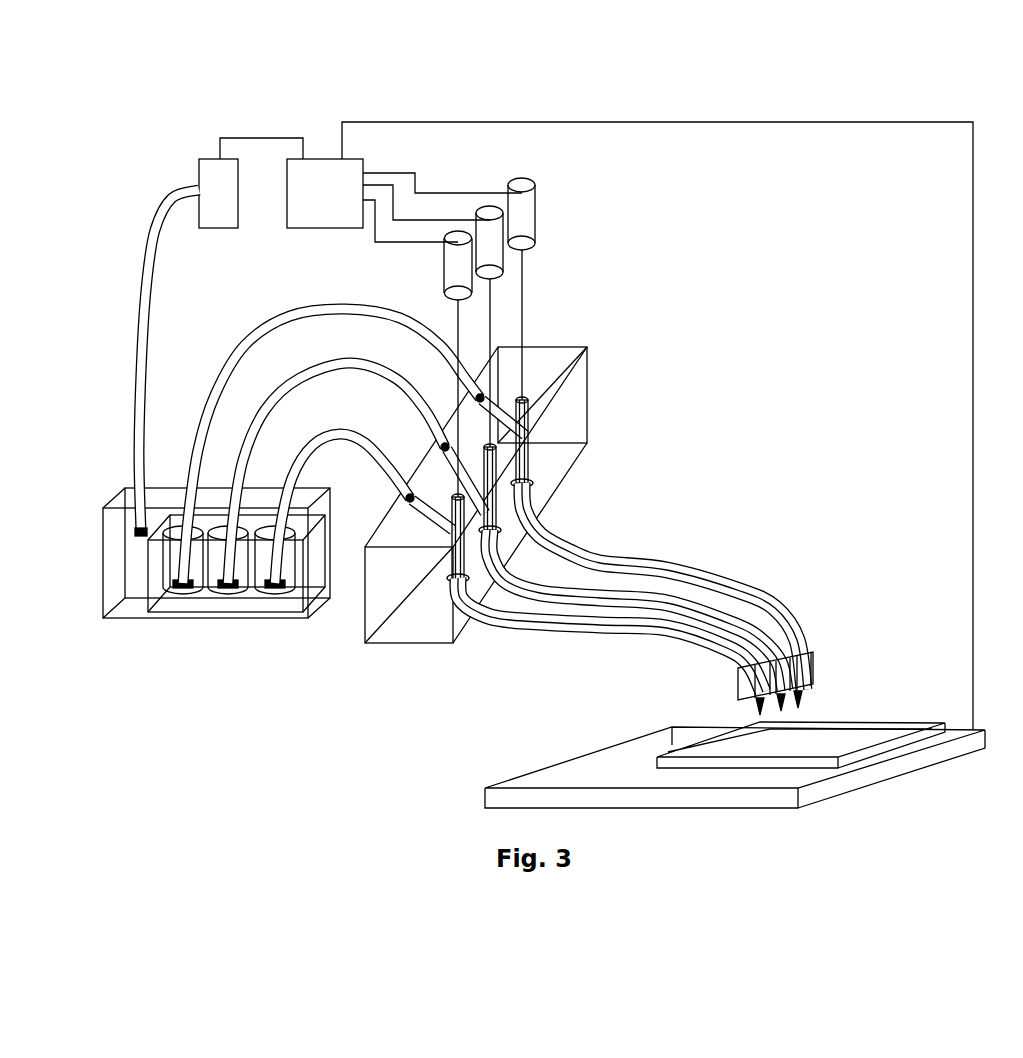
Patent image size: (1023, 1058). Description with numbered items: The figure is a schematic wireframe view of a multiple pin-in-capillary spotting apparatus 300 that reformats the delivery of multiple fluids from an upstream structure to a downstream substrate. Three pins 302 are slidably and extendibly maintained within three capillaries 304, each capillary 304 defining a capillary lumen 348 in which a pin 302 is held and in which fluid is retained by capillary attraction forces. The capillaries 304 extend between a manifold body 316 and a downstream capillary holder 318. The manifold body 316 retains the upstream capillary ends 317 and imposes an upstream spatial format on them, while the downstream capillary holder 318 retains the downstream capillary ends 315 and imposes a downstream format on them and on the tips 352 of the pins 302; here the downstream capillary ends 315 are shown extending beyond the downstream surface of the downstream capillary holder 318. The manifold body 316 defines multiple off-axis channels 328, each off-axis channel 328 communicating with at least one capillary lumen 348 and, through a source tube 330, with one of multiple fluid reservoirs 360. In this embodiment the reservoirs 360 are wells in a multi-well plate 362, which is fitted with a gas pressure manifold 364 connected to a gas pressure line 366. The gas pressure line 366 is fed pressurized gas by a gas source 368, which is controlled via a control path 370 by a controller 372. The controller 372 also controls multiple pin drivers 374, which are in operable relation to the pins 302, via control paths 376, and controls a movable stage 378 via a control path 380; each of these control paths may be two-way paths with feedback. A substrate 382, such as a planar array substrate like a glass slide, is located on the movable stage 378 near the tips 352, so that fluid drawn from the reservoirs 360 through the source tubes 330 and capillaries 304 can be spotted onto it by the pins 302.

The multiple pin-in-capillary spotting apparatus 300 is at (375, 747).
The pins 302 is at (527, 288).
The capillaries 304 is at (568, 562).
The downstream capillary end 315 is at (810, 657).
The manifold body 316 is at (590, 383).
The upstream capillary end 317 is at (527, 447).
The downstream capillary holder 318 is at (747, 677).
The off-axis channel 328 is at (432, 512).
The source tube 330 is at (252, 335).
The capillary lumen 348 is at (740, 583).
The tip 352 is at (797, 703).
The fluid reservoirs 360 is at (190, 616).
The multi-well plate 362 is at (146, 613).
The gas pressure manifold 364 is at (284, 620).
The gas pressure line 366 is at (160, 237).
The gas source 368 is at (210, 180).
The control path 370 is at (247, 137).
The controller 372 is at (317, 177).
The pin drivers 374 is at (522, 215).
The control paths 376 is at (420, 192).
The movable stage 378 is at (531, 768).
The control path 380 is at (675, 124).
The substrate 382 is at (887, 725).